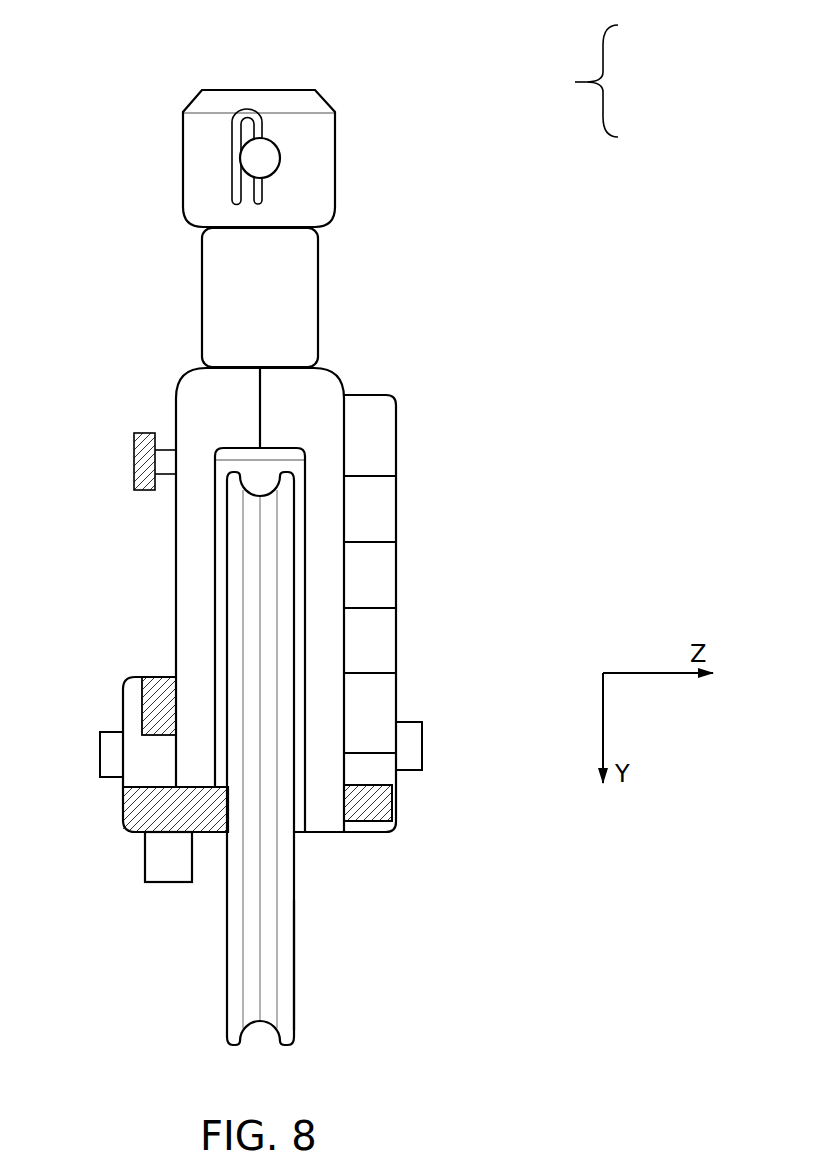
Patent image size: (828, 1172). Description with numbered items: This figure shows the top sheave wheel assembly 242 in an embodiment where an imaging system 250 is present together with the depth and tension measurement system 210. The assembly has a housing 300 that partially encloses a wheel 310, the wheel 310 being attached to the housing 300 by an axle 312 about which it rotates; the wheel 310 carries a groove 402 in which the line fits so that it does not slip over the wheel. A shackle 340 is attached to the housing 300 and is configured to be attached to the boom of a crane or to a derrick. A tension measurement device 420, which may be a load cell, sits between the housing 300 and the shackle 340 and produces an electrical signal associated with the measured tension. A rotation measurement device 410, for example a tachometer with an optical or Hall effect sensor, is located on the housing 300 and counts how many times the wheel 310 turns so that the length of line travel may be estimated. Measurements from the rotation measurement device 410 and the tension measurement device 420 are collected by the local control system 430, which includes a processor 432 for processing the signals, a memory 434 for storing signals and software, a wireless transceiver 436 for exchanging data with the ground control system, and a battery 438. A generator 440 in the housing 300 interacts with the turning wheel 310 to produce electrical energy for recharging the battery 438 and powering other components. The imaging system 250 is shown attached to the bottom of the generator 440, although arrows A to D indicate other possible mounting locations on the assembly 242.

The depth and tension measurement system 210 is at (479, 443).
The top sheave wheel assembly 242 is at (284, 985).
The imaging system 250 is at (168, 882).
The housing 300 is at (168, 372).
The wheel 310 is at (305, 885).
The axle 312 is at (422, 745).
The shackle 340 is at (335, 157).
The groove 402 is at (262, 923).
The rotation measurement device 410 is at (412, 813).
The tension measurement device 420 is at (333, 318).
The local control system 430 is at (504, 416).
The processor 432 is at (396, 507).
The memory 434 is at (396, 575).
The wireless transceiver 436 is at (396, 642).
The battery 438 is at (396, 698).
The generator 440 is at (108, 818).